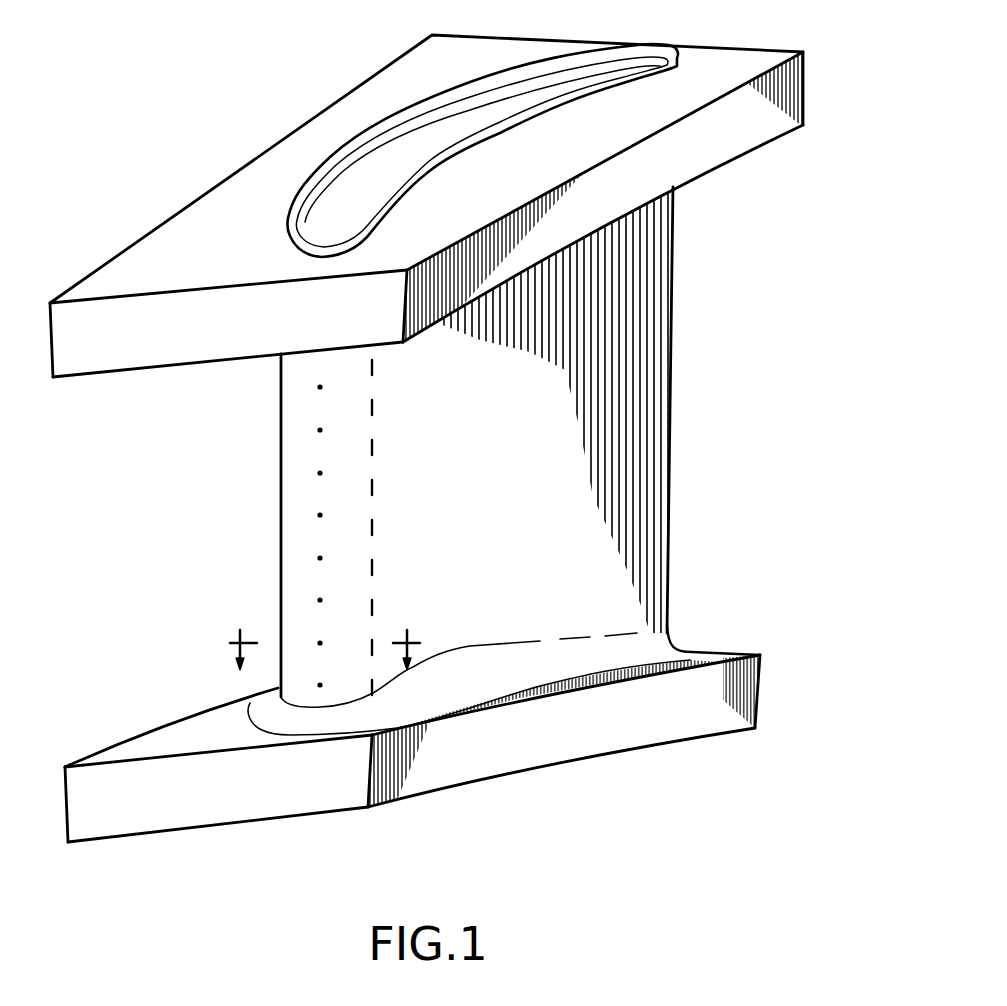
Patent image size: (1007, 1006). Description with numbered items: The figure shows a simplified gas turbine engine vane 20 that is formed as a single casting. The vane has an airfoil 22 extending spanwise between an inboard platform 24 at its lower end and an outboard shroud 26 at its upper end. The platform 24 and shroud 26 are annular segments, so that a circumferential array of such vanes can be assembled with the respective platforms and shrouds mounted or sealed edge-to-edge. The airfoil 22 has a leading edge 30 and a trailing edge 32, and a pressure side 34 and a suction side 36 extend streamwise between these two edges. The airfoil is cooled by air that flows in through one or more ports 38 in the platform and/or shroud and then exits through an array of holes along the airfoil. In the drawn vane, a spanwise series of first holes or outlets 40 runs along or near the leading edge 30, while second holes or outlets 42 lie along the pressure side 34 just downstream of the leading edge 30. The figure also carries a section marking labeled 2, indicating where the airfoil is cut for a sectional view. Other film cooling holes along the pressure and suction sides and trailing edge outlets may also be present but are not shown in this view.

The gas turbine engine vane 20 is at (237, 110).
The airfoil 22 is at (257, 518).
The inboard platform 24 is at (792, 704).
The outboard shroud 26 is at (110, 374).
The leading edge 30 is at (318, 577).
The trailing edge 32 is at (672, 520).
The pressure side 34 is at (637, 405).
The suction side 36 is at (283, 490).
The port 38 is at (378, 172).
The first holes/outlets 40 is at (322, 430).
The second holes/outlets 42 is at (373, 447).
The section line 2- 2 is at (325, 642).